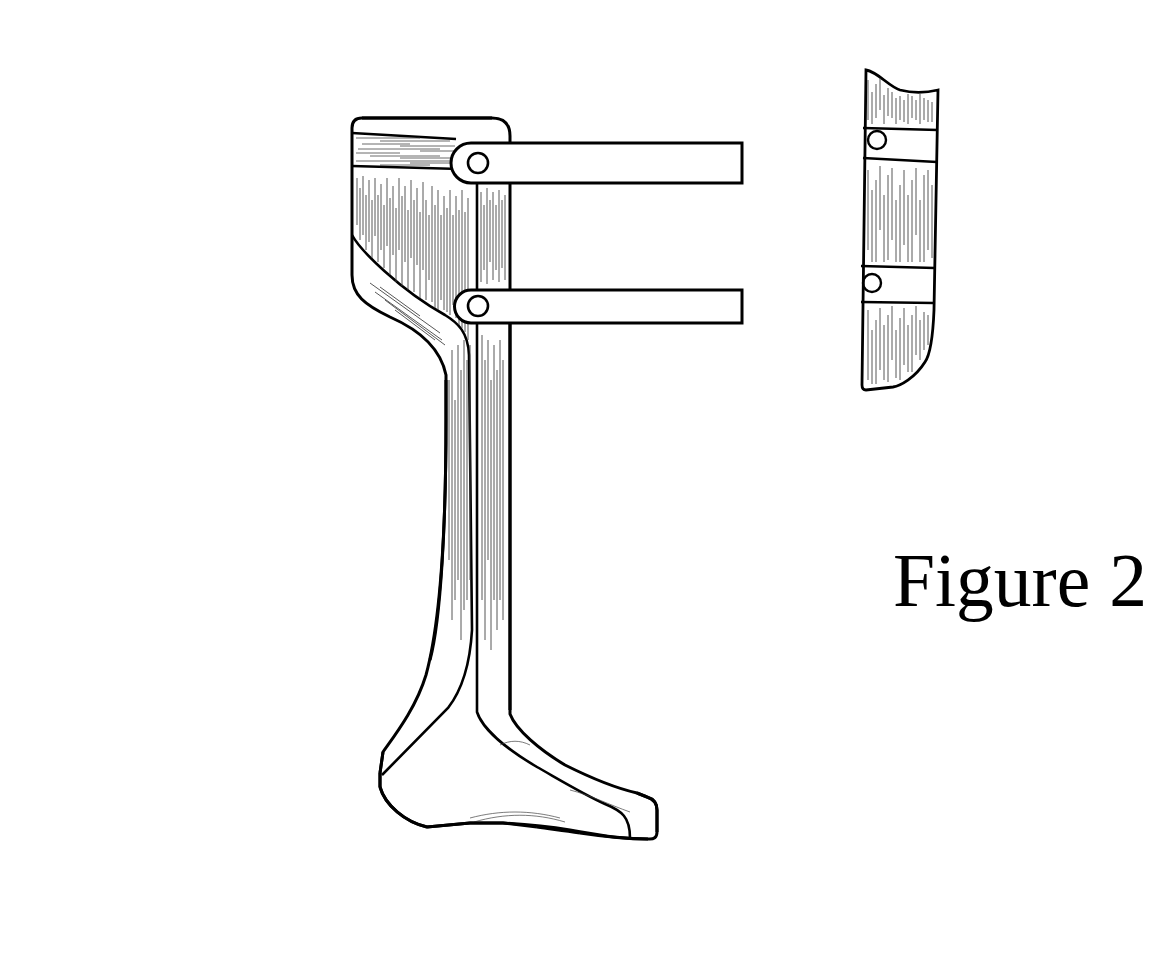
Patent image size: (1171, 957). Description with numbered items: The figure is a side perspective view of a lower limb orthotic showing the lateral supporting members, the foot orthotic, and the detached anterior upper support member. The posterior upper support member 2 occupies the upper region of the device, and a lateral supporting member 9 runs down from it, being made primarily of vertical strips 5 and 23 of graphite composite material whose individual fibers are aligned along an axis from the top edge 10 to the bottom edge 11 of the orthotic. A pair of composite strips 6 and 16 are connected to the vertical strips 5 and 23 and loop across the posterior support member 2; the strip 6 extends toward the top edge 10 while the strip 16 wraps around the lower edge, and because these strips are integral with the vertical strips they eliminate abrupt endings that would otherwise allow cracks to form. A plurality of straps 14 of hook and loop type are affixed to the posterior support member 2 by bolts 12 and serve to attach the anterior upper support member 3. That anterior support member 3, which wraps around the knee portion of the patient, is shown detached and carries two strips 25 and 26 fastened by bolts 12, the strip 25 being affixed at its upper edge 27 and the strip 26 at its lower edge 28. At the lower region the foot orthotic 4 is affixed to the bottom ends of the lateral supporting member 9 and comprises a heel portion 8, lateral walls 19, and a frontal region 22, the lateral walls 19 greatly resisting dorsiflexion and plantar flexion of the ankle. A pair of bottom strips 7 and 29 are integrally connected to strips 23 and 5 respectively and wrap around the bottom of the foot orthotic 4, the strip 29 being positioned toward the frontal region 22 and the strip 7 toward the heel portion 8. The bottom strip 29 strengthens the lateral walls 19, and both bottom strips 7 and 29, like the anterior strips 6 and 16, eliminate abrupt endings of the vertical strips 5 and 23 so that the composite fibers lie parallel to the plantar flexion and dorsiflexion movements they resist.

The posterior upper support member 2 is at (388, 222).
The anterior upper support member 3 is at (912, 205).
The foot orthotic 4 is at (527, 727).
The vertical strip 5 is at (507, 460).
The strip of composite material 6 is at (350, 130).
The bottom composite strip 7 is at (377, 743).
The heel portion 8 is at (393, 835).
The lateral supporting member 9 is at (515, 488).
The top edge 10 is at (430, 117).
The bottom edge 11 is at (493, 833).
The bolt 12 is at (462, 170).
The strap 14 is at (660, 165).
The strip of composite material 16 is at (352, 255).
The lateral wall 19 is at (560, 833).
The frontal region 22 is at (658, 827).
The vertical strip 23 is at (443, 473).
The strip 25 is at (913, 143).
The strip 26 is at (900, 287).
The upper edge 27 is at (860, 72).
The lower edge 28 is at (848, 390).
The bottom composite strip 29 is at (660, 843).